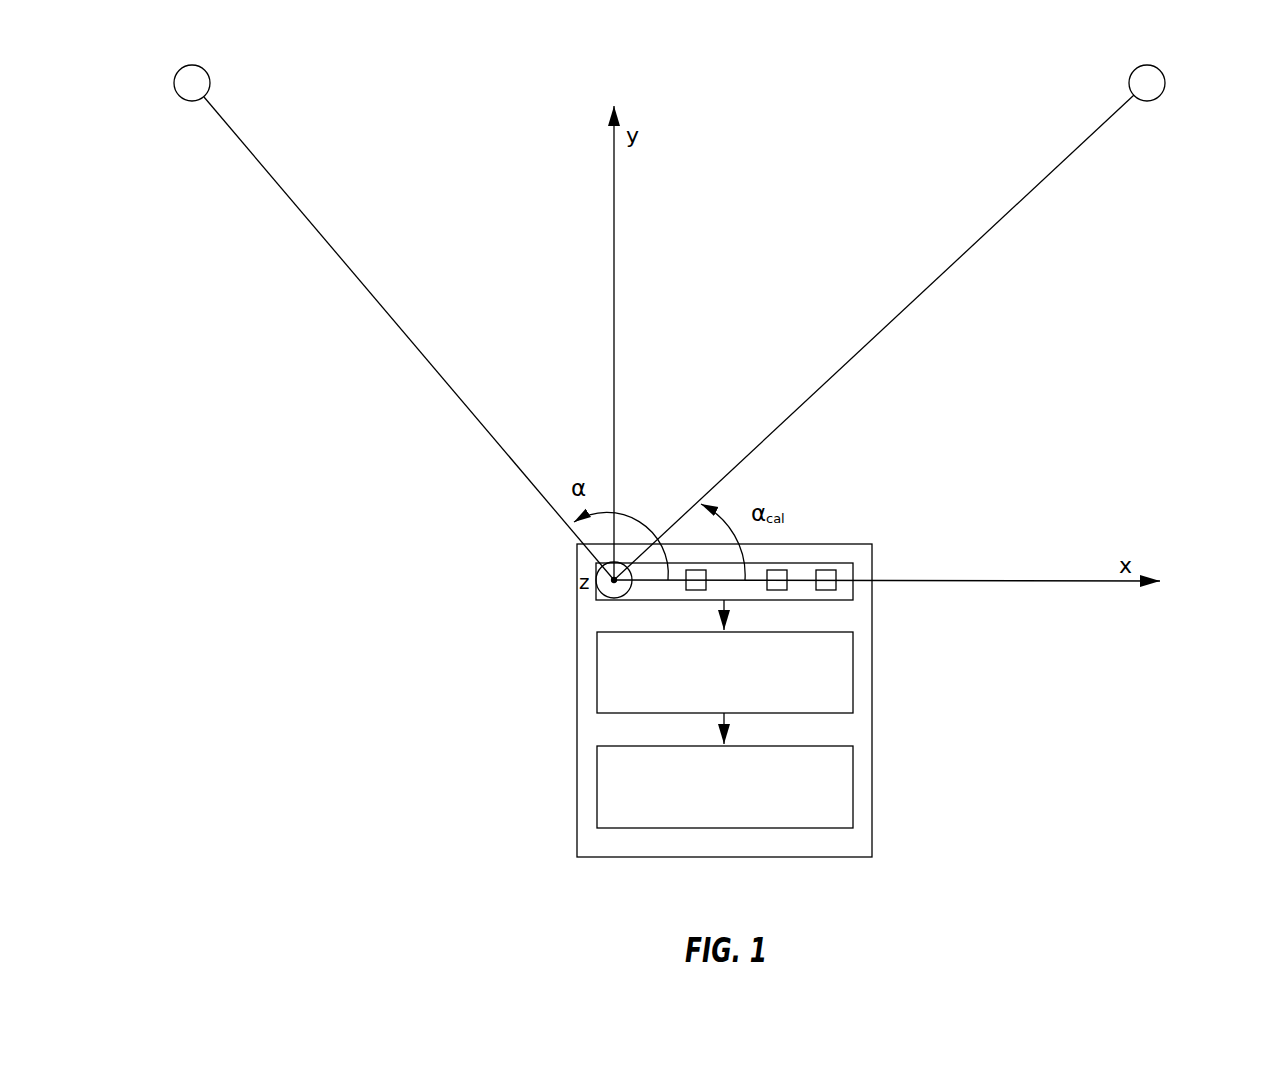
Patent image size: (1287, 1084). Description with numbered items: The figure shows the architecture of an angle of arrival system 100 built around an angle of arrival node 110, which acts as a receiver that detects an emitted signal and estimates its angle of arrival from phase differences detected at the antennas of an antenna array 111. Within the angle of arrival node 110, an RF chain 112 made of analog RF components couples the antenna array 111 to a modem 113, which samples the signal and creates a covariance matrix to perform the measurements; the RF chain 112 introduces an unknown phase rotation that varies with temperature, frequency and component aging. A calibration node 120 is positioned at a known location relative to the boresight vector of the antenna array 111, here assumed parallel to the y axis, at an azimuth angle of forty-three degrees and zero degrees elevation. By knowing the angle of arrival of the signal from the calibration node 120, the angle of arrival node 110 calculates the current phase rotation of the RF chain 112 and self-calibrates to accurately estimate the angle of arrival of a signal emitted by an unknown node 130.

The angle of arrival system 100 is at (1095, 767).
The angle of arrival node 110 is at (577, 763).
The antenna array 111 is at (840, 561).
The RF chain 112 is at (725, 672).
The modem 113 is at (725, 787).
The calibration node 120 is at (1129, 83).
The unknown node 130 is at (211, 83).